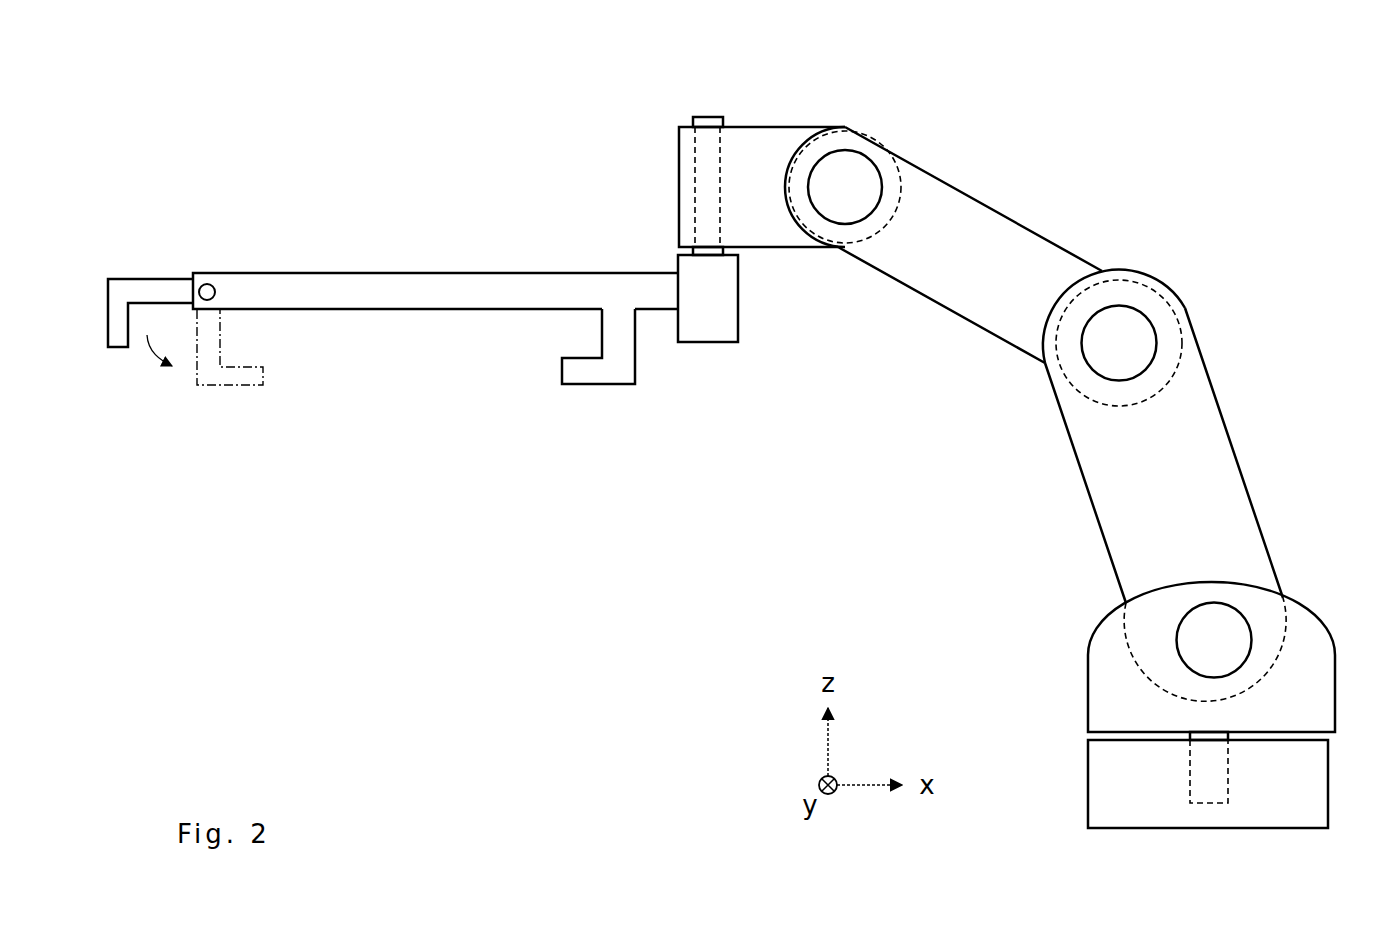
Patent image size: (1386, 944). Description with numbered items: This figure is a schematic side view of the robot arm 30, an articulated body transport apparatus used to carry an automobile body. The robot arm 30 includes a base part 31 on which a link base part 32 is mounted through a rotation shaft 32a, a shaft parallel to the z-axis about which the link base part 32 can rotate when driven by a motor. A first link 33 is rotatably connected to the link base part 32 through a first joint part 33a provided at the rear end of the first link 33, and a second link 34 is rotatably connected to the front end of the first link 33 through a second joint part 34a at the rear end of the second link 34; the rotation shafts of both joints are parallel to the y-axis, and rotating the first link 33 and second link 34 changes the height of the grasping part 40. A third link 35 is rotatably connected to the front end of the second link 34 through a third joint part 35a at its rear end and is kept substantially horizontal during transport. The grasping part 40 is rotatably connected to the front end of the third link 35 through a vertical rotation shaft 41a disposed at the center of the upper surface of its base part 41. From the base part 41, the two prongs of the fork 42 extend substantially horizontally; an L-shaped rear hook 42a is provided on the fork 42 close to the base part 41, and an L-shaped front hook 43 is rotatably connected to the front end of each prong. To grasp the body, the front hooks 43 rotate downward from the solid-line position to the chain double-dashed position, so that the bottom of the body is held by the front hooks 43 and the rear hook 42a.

The robot arm 30 is at (1062, 176).
The base part 31 is at (1095, 793).
The link base part 32 is at (1095, 685).
The rotation shaft 32a is at (1208, 797).
The first link 33 is at (1077, 467).
The first joint part 33a is at (1240, 618).
The second link 34 is at (930, 297).
The second joint part 34a is at (1148, 322).
The third link 35 is at (772, 135).
The third joint part 35a is at (842, 150).
The grasping part 40 is at (422, 246).
The base part 41 is at (713, 330).
The rotation shaft 41a is at (702, 117).
The fork 42 is at (483, 293).
The rear hook 42a is at (597, 368).
The front hook 43 is at (117, 338).